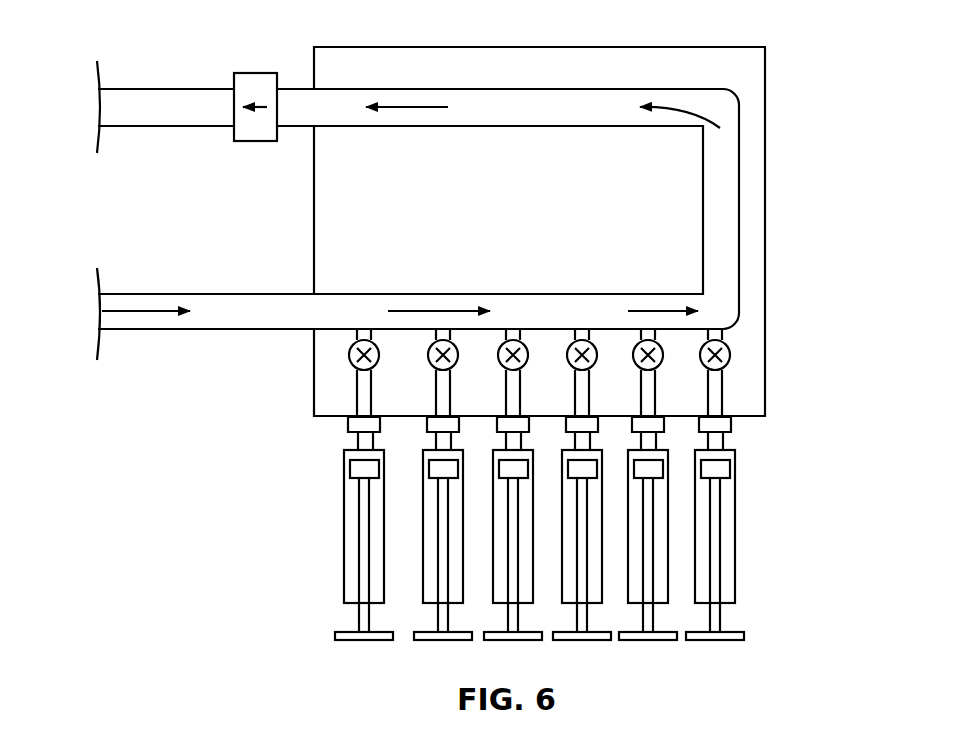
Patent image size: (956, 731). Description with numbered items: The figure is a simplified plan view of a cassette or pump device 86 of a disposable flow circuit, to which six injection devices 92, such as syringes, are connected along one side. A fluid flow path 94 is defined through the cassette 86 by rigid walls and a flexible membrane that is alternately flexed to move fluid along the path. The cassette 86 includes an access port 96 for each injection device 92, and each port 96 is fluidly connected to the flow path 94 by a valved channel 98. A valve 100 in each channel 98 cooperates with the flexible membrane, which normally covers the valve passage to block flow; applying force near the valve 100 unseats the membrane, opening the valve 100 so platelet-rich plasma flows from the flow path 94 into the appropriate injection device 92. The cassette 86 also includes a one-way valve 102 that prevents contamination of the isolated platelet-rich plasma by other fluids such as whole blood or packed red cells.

The cassette or pump device 86 is at (683, 47).
The fluid flow path 94 is at (720, 213).
The one-way valve 102 is at (262, 72).
The valve 100 is at (428, 360).
The valved channel 98 is at (436, 393).
The access port 96 is at (497, 426).
The injection device 92 is at (357, 642).